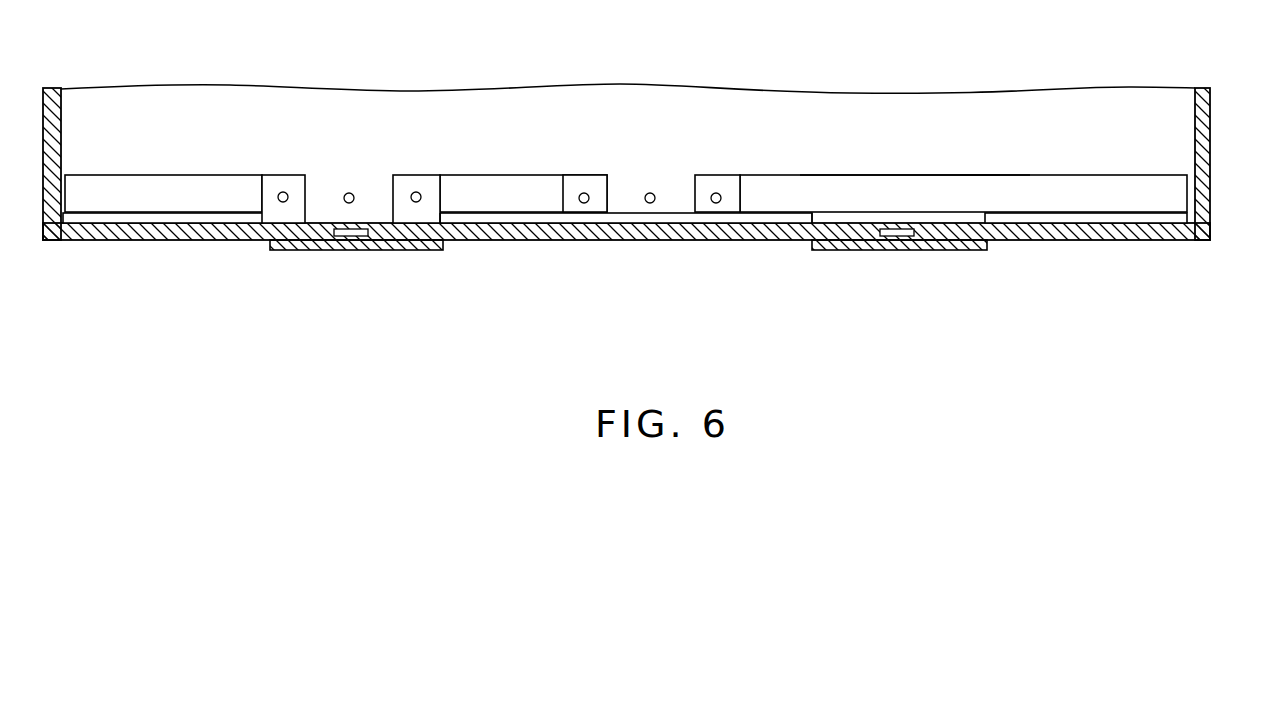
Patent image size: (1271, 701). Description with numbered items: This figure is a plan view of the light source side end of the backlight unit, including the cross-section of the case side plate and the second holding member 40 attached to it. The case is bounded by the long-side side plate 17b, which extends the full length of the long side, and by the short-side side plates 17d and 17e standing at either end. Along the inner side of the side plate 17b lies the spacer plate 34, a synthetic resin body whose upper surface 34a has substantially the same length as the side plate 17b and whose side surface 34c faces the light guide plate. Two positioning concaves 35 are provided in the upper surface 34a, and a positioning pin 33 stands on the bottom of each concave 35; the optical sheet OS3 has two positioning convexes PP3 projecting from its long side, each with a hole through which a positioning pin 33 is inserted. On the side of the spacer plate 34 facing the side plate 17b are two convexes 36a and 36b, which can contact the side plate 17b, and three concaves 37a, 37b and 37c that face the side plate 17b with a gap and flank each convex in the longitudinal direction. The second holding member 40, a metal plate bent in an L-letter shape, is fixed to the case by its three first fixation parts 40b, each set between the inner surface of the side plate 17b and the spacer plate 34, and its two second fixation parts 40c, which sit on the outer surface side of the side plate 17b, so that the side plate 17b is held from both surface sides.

The short-side side plate 17e is at (50, 148).
The short-side side plate 17d is at (1210, 161).
The long-side side plate 17b is at (1078, 233).
The positioning pin 33 is at (349, 192).
The spacer plate 34 is at (783, 188).
The upper surface 34a is at (888, 196).
The side surface 34c is at (992, 172).
The optical sheet OS3 is at (1068, 117).
The positioning concave 35 is at (314, 195).
The concave 37a is at (1030, 213).
The concave 37b is at (728, 213).
The concave 37c is at (222, 213).
The convex 36a is at (843, 223).
The convex 36b is at (412, 226).
The second holding member 40 is at (943, 258).
The first fixation part 40b is at (143, 205).
The second fixation part 40c is at (344, 235).
The convex for positioning PP3 is at (378, 198).